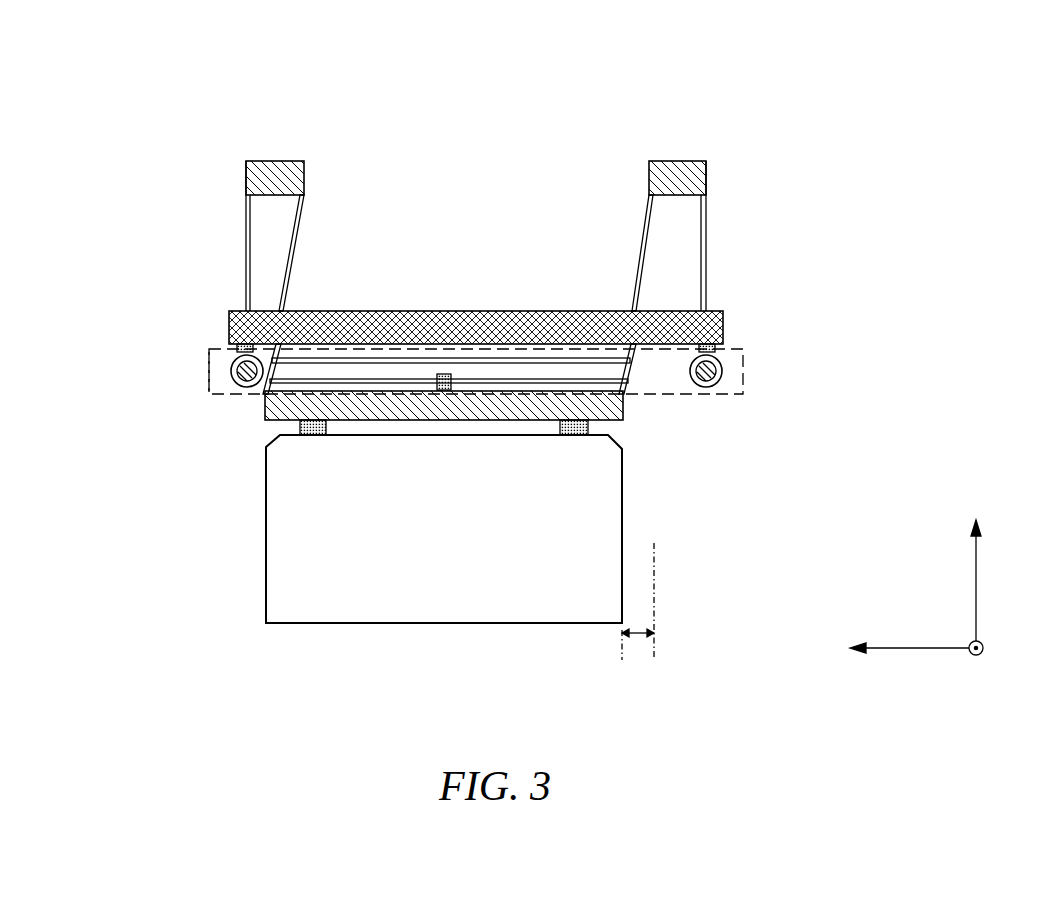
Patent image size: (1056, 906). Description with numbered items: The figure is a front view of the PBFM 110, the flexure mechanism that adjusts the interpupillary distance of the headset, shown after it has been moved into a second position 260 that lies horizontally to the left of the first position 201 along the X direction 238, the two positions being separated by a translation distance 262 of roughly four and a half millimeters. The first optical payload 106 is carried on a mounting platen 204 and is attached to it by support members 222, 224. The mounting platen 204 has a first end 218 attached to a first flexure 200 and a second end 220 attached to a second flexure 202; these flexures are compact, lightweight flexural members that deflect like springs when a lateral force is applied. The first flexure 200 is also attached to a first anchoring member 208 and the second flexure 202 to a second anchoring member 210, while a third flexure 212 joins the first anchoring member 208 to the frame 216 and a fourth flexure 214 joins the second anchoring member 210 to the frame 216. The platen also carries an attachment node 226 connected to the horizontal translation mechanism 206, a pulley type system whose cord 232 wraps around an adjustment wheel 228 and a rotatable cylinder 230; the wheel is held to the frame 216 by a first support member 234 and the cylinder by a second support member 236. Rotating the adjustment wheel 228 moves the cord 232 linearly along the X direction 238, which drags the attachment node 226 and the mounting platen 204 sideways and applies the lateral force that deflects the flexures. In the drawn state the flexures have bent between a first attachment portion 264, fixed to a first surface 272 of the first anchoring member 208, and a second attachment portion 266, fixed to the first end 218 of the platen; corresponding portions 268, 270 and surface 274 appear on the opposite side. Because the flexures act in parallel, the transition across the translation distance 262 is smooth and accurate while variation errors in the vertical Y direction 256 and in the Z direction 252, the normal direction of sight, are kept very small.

The PBFM 110 is at (928, 126).
The first optical payload 106 is at (444, 529).
The first flexure 200 is at (291, 285).
The first position 201 is at (656, 662).
The second flexure 202 is at (638, 282).
The mounting platen 204 is at (489, 503).
The horizontal translation mechanism 206 is at (743, 357).
The first anchoring member 208 is at (302, 183).
The second anchoring member 210 is at (656, 183).
The third flexure 212 is at (246, 285).
The fourth flexure 214 is at (706, 282).
The frame 216 is at (378, 311).
The first end 218 is at (272, 419).
The second end 220 is at (655, 501).
The support member 222 is at (302, 433).
The support member 224 is at (573, 435).
The attachment node 226 is at (447, 374).
The adjustment wheel 228 is at (722, 371).
The rotatable cylinder 230 is at (209, 375).
The cord 232 is at (705, 389).
The first support member 234 is at (723, 344).
The second support member 236 is at (229, 343).
The X direction 238 is at (915, 648).
The Z-direction 252 is at (980, 654).
The Y-direction 256 is at (976, 567).
The second position 260 is at (620, 665).
The translation distance 262 is at (630, 650).
The first attachment portion 264 is at (328, 132).
The second attachment portion 266 is at (237, 400).
The second magnet block 268 is at (628, 133).
The second strut 270 is at (650, 383).
The first surface 272 is at (290, 160).
The second block top 274 is at (668, 161).